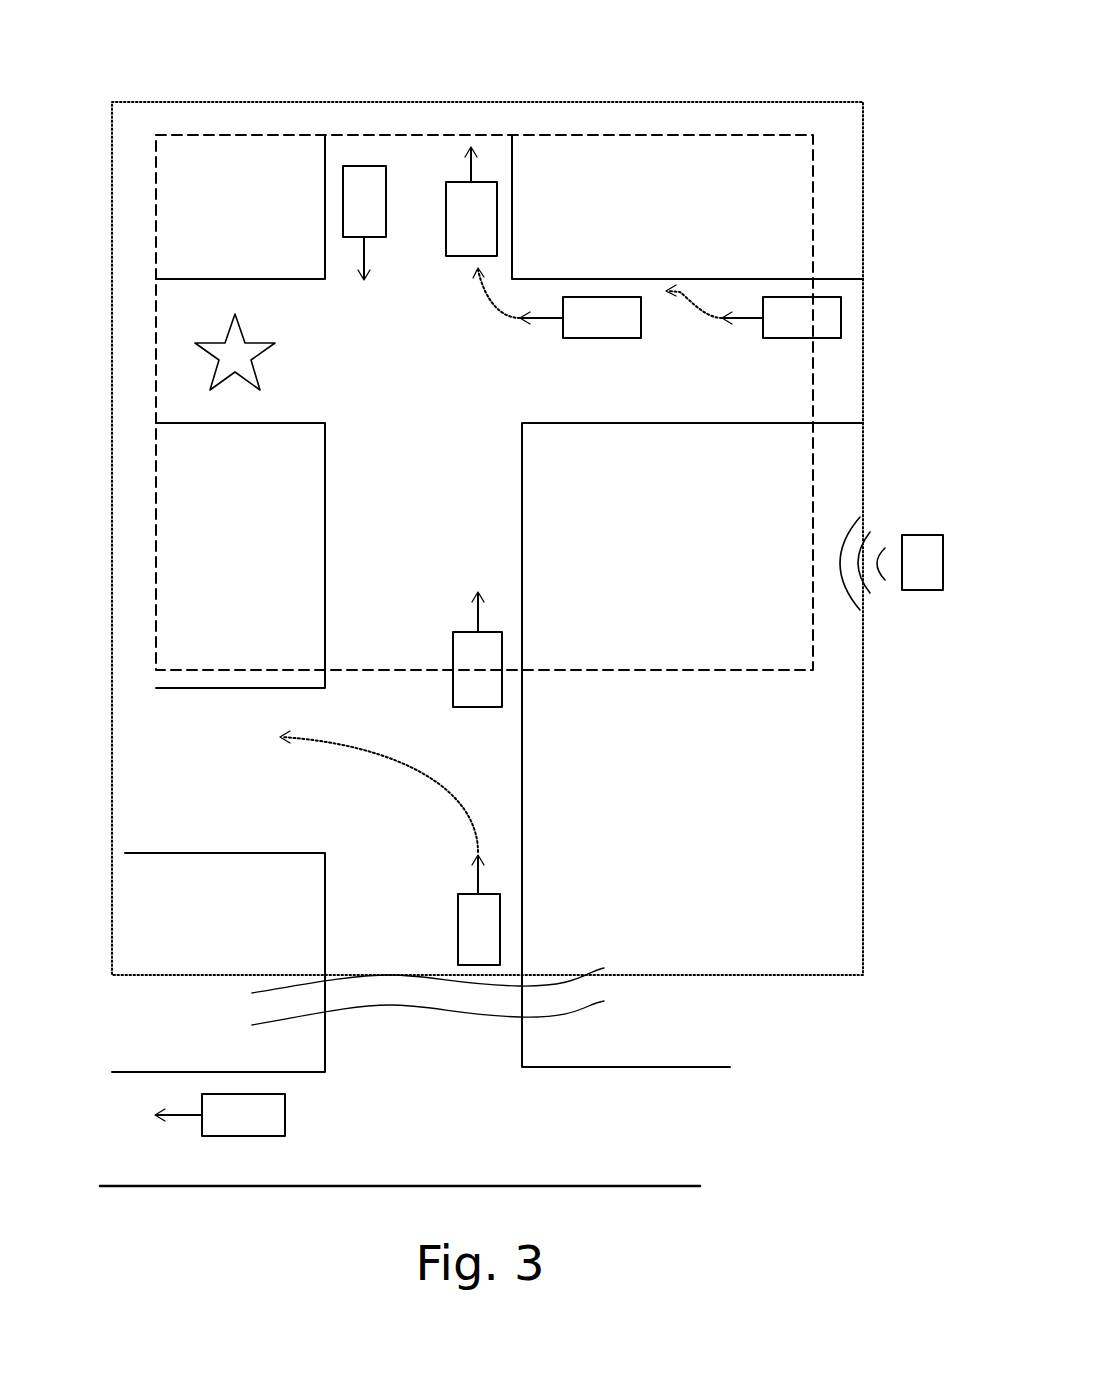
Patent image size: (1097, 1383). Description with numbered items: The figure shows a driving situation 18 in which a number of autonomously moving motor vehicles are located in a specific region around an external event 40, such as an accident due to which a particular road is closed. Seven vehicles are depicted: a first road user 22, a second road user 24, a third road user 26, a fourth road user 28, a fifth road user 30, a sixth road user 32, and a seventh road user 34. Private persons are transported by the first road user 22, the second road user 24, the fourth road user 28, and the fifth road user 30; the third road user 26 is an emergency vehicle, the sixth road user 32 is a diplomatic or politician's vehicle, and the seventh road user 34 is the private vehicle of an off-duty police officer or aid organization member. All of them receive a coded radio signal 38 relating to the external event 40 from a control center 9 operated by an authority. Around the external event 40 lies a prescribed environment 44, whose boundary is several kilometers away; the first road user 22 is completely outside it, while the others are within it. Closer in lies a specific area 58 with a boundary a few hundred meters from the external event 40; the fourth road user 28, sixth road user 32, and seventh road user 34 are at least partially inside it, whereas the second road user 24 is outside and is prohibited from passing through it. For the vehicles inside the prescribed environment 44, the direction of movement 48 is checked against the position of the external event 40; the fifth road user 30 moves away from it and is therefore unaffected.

The driving situation 18 is at (848, 86).
The prescribed environment 44 is at (865, 196).
The specific area 58 is at (156, 325).
The external event 40 is at (218, 360).
The sixth road user 32 is at (372, 178).
The fifth road user 30 is at (455, 194).
The fourth road user 28 is at (607, 328).
The seventh road user 34 is at (830, 318).
The third road user 26 is at (478, 692).
The second road user 24 is at (470, 930).
The first road user 22 is at (275, 1110).
The control center 9 is at (920, 535).
The signal 38 is at (882, 565).
The direction of movement 48 is at (476, 160).